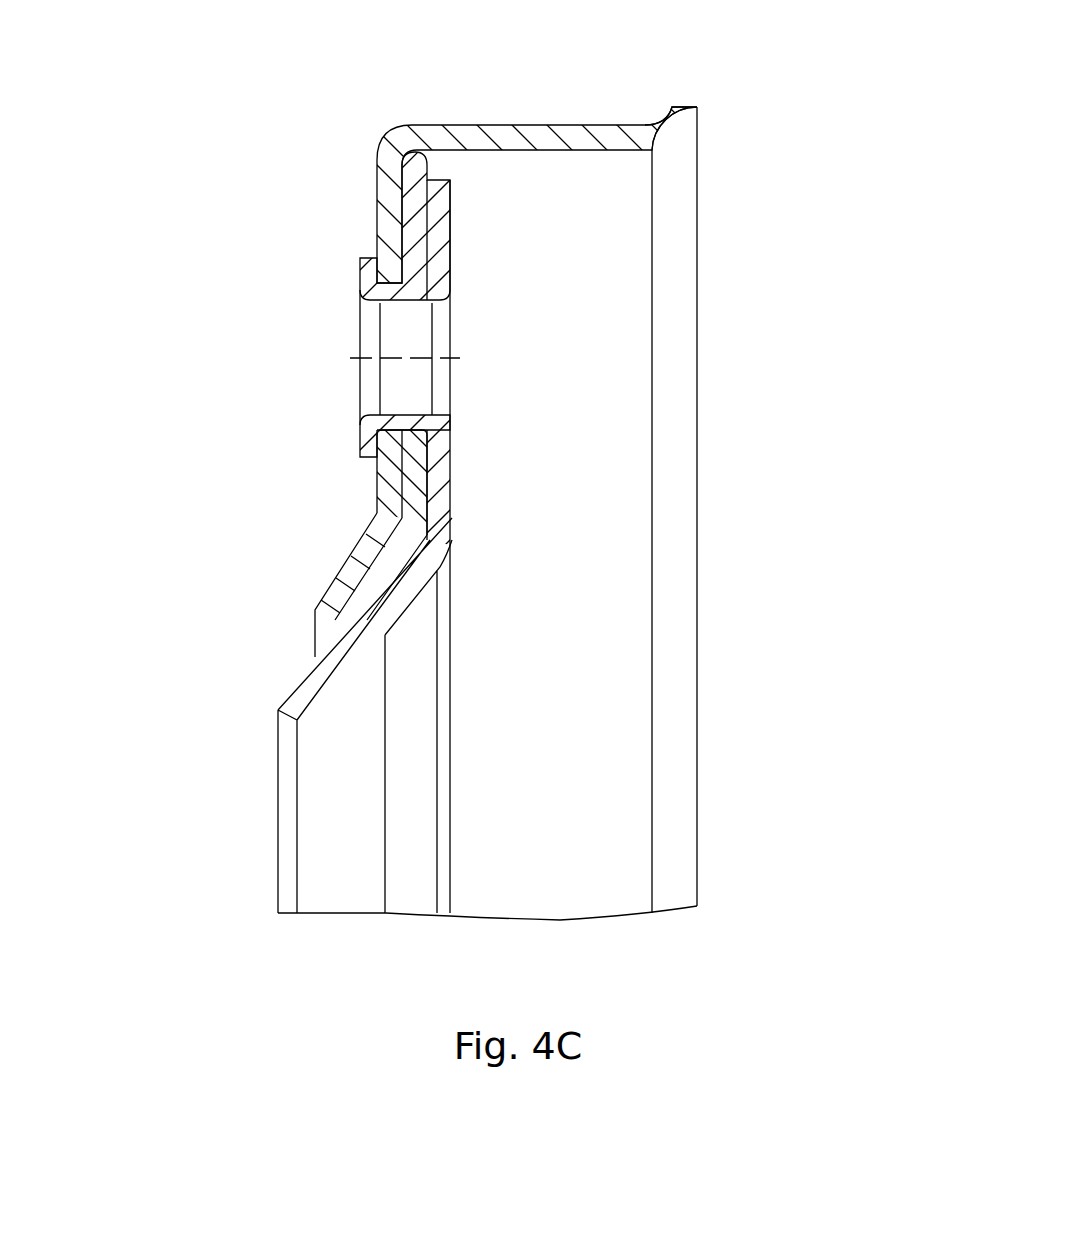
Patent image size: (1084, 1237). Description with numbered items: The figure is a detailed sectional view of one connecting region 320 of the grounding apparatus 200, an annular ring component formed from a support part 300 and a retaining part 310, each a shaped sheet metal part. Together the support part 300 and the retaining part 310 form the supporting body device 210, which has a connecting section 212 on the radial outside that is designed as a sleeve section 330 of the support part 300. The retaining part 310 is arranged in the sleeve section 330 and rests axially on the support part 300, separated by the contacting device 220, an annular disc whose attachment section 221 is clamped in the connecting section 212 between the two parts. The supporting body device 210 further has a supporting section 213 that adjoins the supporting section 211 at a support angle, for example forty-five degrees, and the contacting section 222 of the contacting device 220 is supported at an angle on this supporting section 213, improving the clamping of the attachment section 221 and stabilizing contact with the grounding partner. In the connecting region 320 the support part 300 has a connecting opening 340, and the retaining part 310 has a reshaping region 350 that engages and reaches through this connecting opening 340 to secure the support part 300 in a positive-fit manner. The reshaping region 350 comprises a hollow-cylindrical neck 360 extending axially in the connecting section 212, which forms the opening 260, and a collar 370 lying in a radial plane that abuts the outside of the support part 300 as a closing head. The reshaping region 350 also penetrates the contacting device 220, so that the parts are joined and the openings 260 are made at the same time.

The grounding apparatus 200 is at (728, 58).
The supporting body device 210 is at (117, 125).
The supporting section 211 is at (227, 196).
The connecting section 212 is at (229, 123).
The supporting section 213 is at (227, 541).
The contacting device 220 is at (873, 190).
The attachment section 221 is at (774, 190).
The contacting section 222 is at (774, 543).
The opening 260 is at (413, 333).
The support part 300 is at (503, 132).
The retaining part 310 is at (442, 485).
The connecting region 320 is at (309, 262).
The sleeve section 330 is at (597, 137).
The connecting opening 340 is at (382, 281).
The reshaping region 350 is at (420, 393).
The hollow-cylindrical neck 360 is at (418, 423).
The collar 370 is at (368, 442).